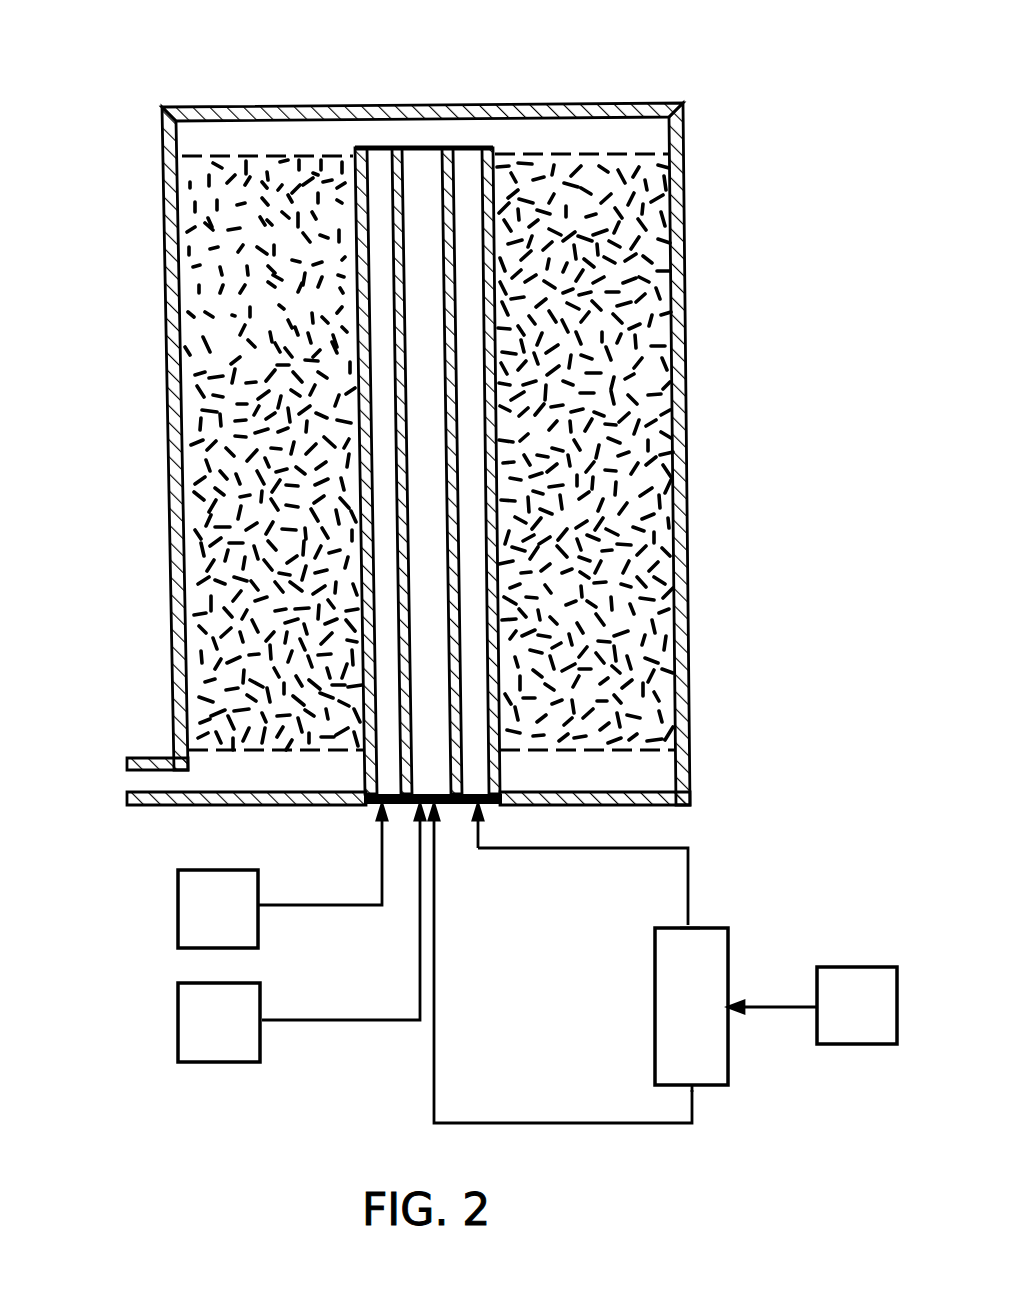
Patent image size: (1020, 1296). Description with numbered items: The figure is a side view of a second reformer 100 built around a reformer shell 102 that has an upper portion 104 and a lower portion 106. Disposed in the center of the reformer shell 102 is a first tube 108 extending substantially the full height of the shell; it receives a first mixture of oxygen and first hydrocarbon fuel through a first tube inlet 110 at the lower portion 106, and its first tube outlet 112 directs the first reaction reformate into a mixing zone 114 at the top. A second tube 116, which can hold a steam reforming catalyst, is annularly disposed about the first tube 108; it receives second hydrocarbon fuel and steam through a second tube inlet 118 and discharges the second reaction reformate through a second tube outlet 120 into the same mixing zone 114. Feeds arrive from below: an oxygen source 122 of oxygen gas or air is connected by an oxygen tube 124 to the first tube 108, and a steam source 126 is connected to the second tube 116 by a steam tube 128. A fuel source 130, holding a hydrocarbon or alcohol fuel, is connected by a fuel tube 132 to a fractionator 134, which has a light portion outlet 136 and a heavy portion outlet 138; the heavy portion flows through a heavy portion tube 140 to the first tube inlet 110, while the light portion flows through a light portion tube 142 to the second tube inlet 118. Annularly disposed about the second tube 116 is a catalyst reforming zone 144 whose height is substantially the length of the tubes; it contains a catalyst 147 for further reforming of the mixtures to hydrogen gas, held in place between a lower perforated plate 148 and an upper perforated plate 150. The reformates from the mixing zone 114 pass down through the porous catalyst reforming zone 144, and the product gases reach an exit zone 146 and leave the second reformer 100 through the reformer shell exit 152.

The second reformer 100 is at (128, 103).
The reformer shell 102 is at (690, 497).
The upper portion 104 is at (687, 200).
The lower portion 106 is at (690, 715).
The first tube 108 is at (397, 726).
The first tube inlet 110 is at (443, 805).
The first tube outlet 112 is at (423, 147).
The mixing zone 114 is at (562, 135).
The second tube 116 is at (367, 770).
The second tube inlet 118 is at (378, 808).
The second tube outlet 120 is at (375, 148).
The oxygen source 122 is at (195, 1039).
The oxygen tube 124 is at (305, 1020).
The steam source 126 is at (194, 926).
The steam tube 128 is at (300, 905).
The fuel source 130 is at (833, 1021).
The fuel tube 132 is at (768, 1006).
The fractionator 134 is at (668, 1013).
The light portion outlet 136 is at (692, 927).
The heavy portion outlet 138 is at (693, 1086).
The heavy portion tube 140 is at (540, 1122).
The light portion tube 142 is at (605, 850).
The catalyst reforming zone 144 is at (630, 345).
The exit zone 146 is at (653, 771).
The catalyst 147 is at (220, 333).
The lower perforated plate 148 is at (212, 738).
The upper perforated plate 150 is at (230, 155).
The reformer shell exit 152 is at (128, 783).